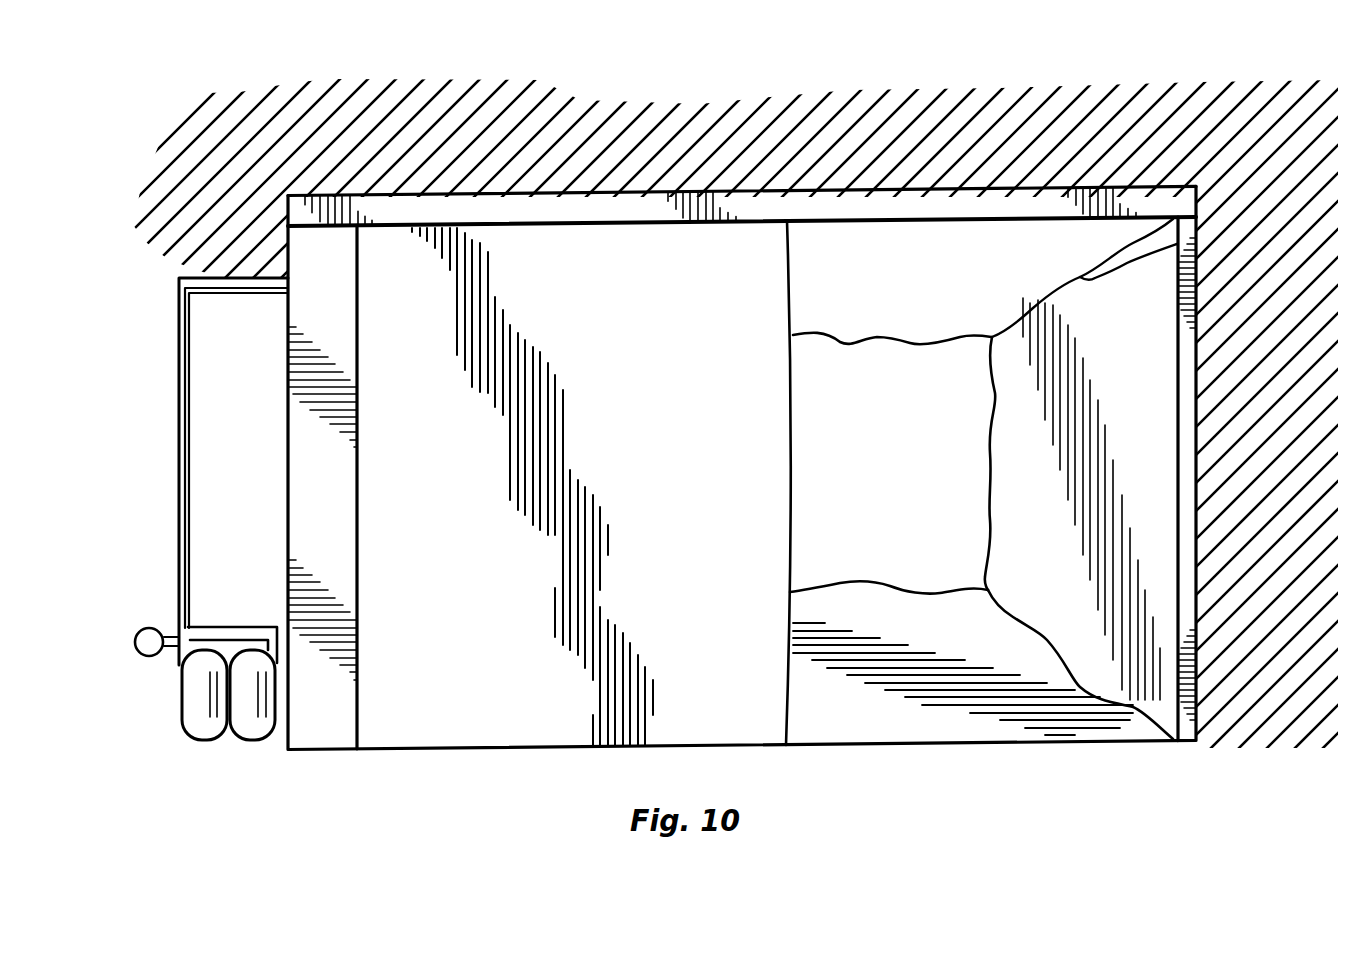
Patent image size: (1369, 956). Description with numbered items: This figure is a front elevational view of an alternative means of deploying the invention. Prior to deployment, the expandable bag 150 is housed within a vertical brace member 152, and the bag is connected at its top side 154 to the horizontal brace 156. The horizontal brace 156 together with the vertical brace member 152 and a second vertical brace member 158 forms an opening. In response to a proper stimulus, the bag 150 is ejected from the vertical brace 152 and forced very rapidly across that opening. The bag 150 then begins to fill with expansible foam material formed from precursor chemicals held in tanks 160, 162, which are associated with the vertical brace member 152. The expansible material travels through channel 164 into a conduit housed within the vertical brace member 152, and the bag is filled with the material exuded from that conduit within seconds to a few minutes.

The expandable bag 150 is at (702, 474).
The vertical brace member 152 is at (312, 297).
The top side 154 is at (763, 226).
The horizontal brace 156 is at (629, 210).
The vertical brace member 158 is at (1090, 280).
The tank 160 is at (250, 733).
The tank 162 is at (190, 728).
The channel 164 is at (187, 417).